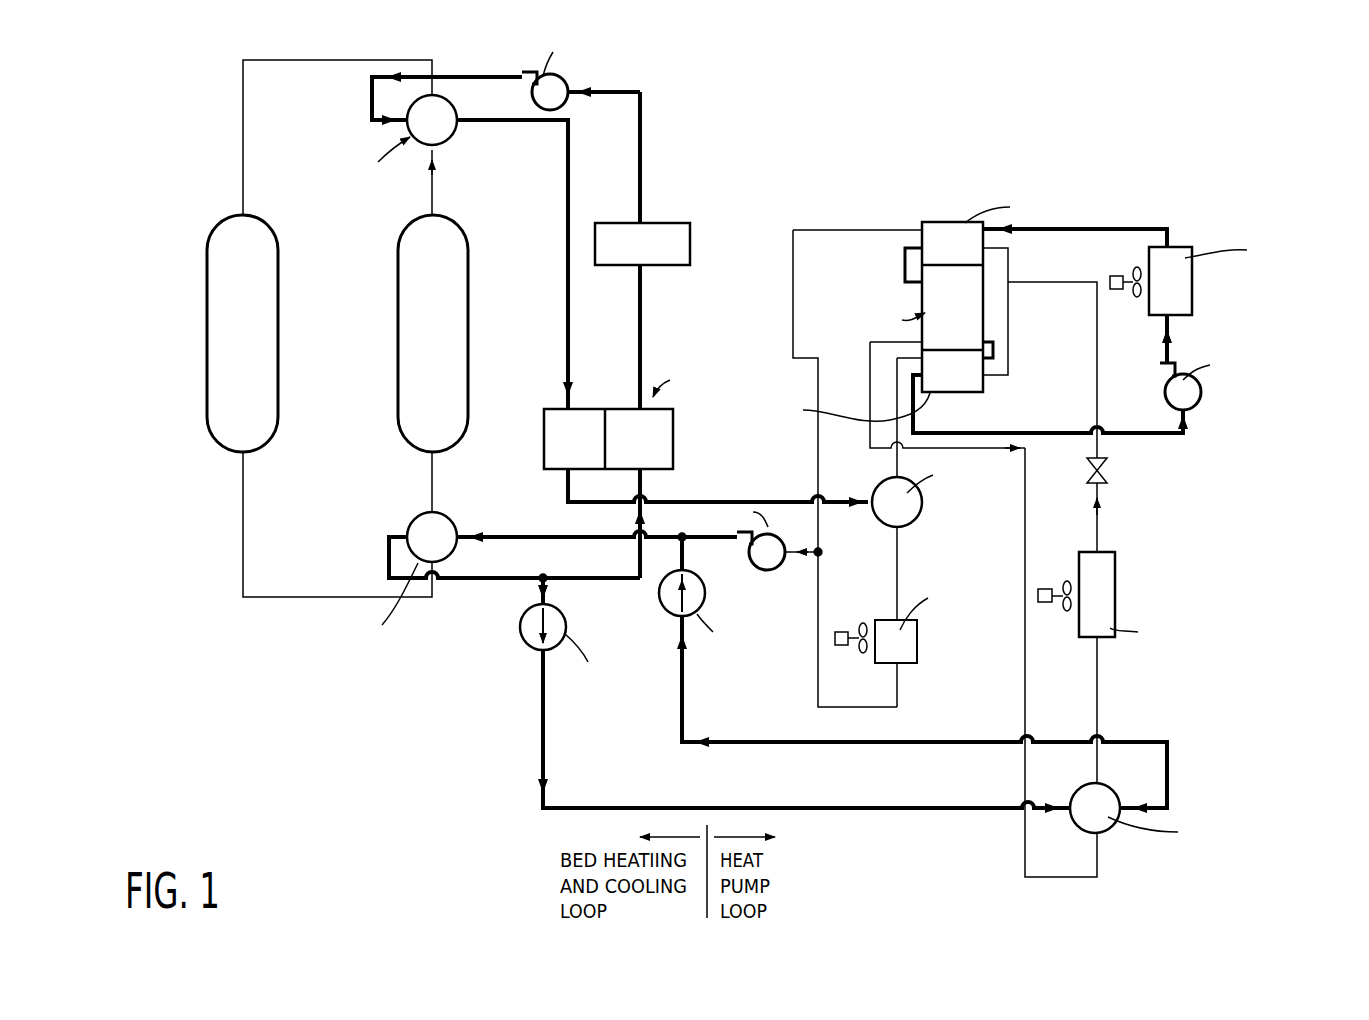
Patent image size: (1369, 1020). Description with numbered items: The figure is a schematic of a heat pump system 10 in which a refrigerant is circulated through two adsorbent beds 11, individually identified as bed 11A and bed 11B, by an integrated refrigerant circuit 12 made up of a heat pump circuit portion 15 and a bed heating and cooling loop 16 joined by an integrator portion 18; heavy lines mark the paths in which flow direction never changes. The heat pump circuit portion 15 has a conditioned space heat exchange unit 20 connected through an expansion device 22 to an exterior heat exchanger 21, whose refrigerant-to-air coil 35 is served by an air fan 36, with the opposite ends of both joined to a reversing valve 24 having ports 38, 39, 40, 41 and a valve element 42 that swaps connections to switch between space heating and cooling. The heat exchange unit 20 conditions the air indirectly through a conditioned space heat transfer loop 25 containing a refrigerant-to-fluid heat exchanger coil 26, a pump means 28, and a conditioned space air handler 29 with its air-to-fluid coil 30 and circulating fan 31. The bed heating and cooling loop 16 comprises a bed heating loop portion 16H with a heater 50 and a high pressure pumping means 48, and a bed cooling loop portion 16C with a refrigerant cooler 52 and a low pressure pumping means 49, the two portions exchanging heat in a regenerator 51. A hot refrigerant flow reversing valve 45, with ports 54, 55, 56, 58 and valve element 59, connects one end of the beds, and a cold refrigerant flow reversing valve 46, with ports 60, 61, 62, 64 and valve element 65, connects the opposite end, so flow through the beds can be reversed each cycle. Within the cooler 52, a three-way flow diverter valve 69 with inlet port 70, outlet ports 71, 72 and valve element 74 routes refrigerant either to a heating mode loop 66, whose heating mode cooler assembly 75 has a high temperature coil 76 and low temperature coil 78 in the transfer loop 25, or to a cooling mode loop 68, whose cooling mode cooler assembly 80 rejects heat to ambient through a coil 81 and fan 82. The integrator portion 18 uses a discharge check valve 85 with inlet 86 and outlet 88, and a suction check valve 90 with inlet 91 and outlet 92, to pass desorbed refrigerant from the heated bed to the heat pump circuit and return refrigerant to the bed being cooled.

The heat pump system 10 is at (290, 680).
The adsorbent beds 11 is at (337, 315).
The bed 11A is at (262, 394).
The bed 11B is at (402, 261).
The integrated refrigerant circuit 12 is at (759, 230).
The heat pump circuit portion 15 is at (1130, 507).
The bed heating and cooling loop 16 is at (662, 78).
The bed cooling loop portion 16C is at (560, 530).
The bed heating loop portion 16H is at (658, 160).
The integrator portion 18 is at (533, 673).
The conditioned space heat exchange unit 20 is at (997, 295).
The exterior heat exchanger 21 is at (1103, 552).
The expansion device 22 is at (1112, 470).
The reversing valve 24 is at (1066, 822).
The conditioned space heat transfer loop 25 is at (1170, 226).
The heat exchanger coil 26 is at (980, 322).
The pump means 28 is at (1193, 397).
The conditioned space air handler 29 is at (1182, 245).
The air-to-fluid heat exchanger coil 30 is at (1192, 302).
The circulating fan 31 is at (1115, 276).
The refrigerant-to-air coil 35 is at (1107, 573).
The air fan 36 is at (1047, 589).
The port 38 is at (1068, 803).
The port 39 is at (1120, 798).
The port 40 is at (1097, 833).
The port 41 is at (1098, 780).
The valve element 42 is at (1087, 817).
The hot refrigerant flow reversing valve 45 is at (452, 86).
The cold refrigerant flow reversing valve 46 is at (414, 503).
The high pressure refrigerant pumping means 48 is at (565, 75).
The low pressure refrigerant pumping means 49 is at (770, 563).
The heater 50 is at (658, 222).
The regenerator 51 is at (605, 407).
The refrigerant cooler 52 is at (843, 478).
The port 54 is at (456, 135).
The port 55 is at (406, 110).
The port 56 is at (455, 108).
The port 58 is at (408, 122).
The valve element 59 is at (423, 141).
The port 60 is at (442, 507).
The port 61 is at (412, 573).
The port 62 is at (462, 548).
The port 64 is at (407, 530).
The valve element 65 is at (417, 545).
The heating mode loop 66 is at (799, 226).
The cooling mode loop 68 is at (811, 717).
The flow diverter valve 69 is at (864, 516).
The inlet port 70 is at (876, 486).
The first outlet port 71 is at (900, 477).
The second outlet port 72 is at (900, 527).
The valve element 74 is at (890, 513).
The heating mode cooler assembly 75 is at (928, 215).
The high temperature refrigerant-to-fluid heat exchanger coil 76 is at (970, 368).
The low temperature refrigerant-to-fluid heat exchanger coil 78 is at (948, 230).
The cooling mode cooler assembly 80 is at (922, 643).
The refrigerant-to-air heat exchanger coil 81 is at (915, 657).
The air circulation fan 82 is at (840, 648).
The discharge check valve 85 is at (523, 625).
The inlet 86 is at (532, 598).
The outlet 88 is at (546, 658).
The suction check valve 90 is at (661, 588).
The inlet 91 is at (677, 617).
The outlet 92 is at (682, 568).